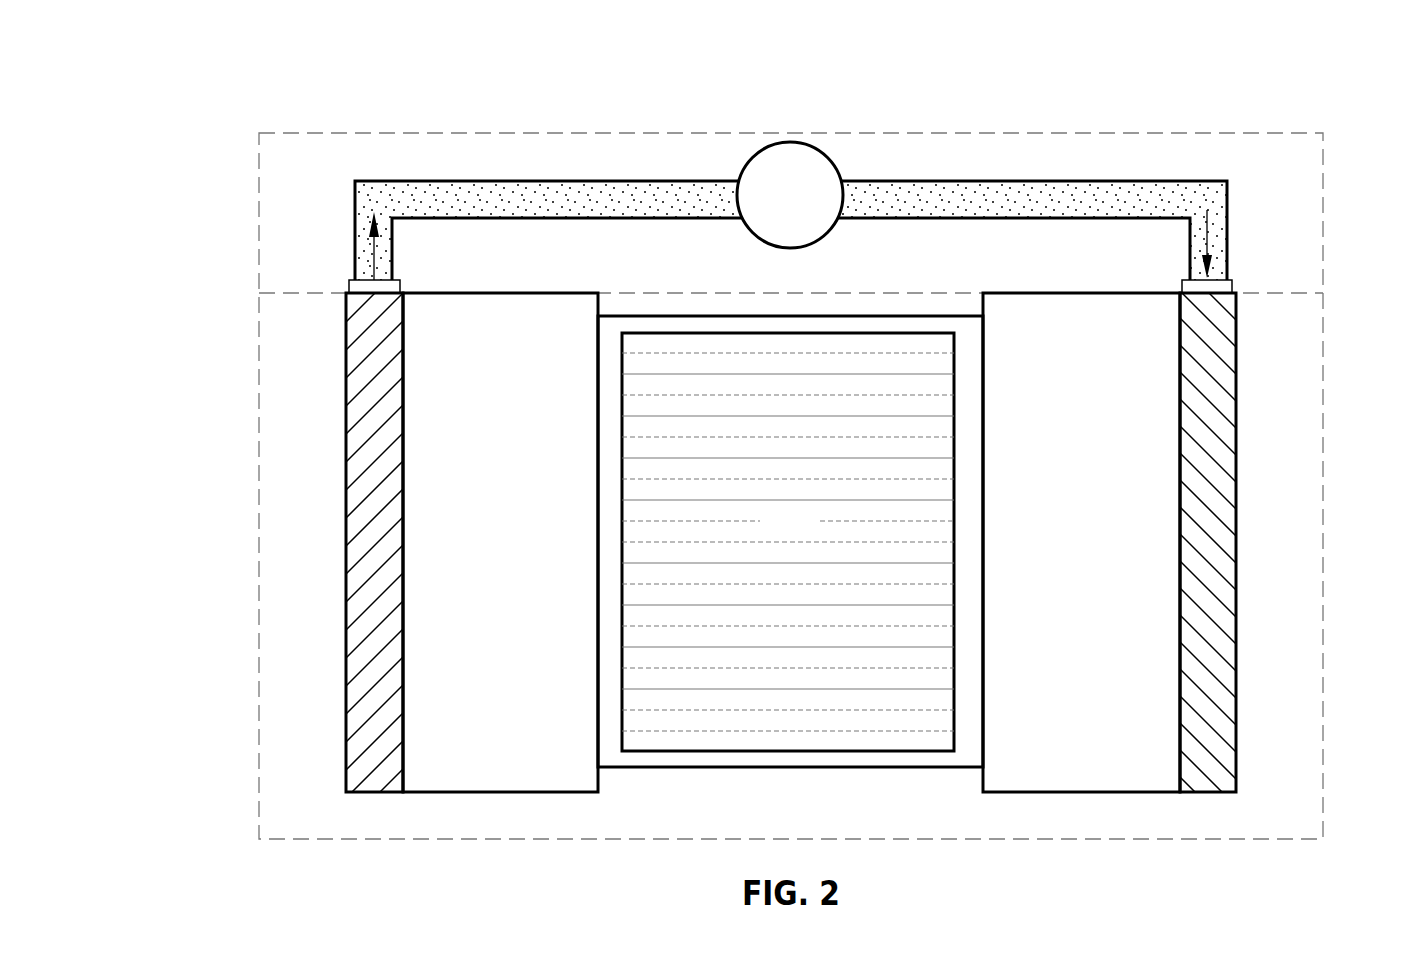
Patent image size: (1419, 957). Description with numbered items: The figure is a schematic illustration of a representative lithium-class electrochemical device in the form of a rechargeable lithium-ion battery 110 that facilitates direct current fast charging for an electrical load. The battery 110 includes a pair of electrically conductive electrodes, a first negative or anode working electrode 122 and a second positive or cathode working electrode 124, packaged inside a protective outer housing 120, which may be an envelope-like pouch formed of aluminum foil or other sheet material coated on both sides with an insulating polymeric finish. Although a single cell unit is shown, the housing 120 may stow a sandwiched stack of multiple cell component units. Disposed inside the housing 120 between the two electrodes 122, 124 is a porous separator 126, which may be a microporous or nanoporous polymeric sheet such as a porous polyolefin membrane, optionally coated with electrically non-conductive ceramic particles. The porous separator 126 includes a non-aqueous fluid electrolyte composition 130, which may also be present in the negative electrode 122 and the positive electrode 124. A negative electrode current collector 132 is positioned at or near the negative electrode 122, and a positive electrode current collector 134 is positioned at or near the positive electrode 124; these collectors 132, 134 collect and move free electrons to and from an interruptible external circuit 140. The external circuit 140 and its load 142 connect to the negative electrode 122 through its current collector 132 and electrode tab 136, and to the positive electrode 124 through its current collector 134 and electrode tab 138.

The lithium-ion battery 110 is at (158, 87).
The protective outer housing 120 is at (250, 356).
The first working electrode 122 is at (523, 523).
The second working electrode 124 is at (1109, 524).
The porous separator 126 is at (645, 768).
The non-aqueous fluid electrolyte composition 130 is at (817, 535).
The negative electrode current collector 132 is at (345, 514).
The positive electrode current collector 134 is at (1236, 514).
The electrode tab 136 is at (345, 283).
The electrode tab 138 is at (1237, 287).
The external circuit 140 is at (407, 122).
The load 142 is at (817, 209).